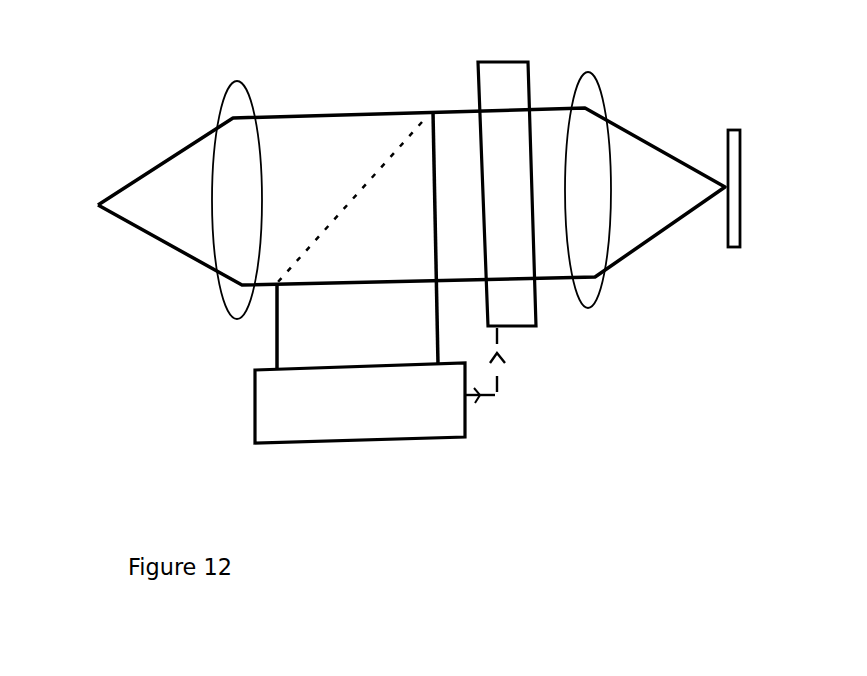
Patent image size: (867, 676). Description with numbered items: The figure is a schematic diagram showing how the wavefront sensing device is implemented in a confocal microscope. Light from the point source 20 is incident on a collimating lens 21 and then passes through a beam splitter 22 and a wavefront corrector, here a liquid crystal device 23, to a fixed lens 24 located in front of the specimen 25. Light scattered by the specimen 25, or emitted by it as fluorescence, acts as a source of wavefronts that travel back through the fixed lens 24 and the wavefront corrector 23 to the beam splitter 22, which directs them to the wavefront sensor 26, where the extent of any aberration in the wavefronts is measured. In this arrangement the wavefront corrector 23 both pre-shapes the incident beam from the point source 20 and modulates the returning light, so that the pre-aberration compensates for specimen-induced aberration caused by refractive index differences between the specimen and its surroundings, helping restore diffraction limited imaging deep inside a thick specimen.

The point source 20 is at (395, 196).
The collimating lens 21 is at (237, 220).
The beam splitter 22 is at (352, 112).
The wavefront corrector 23 is at (500, 61).
The fixed lens 24 is at (611, 291).
The specimen 25 is at (758, 252).
The wavefront sensor 26 is at (254, 401).